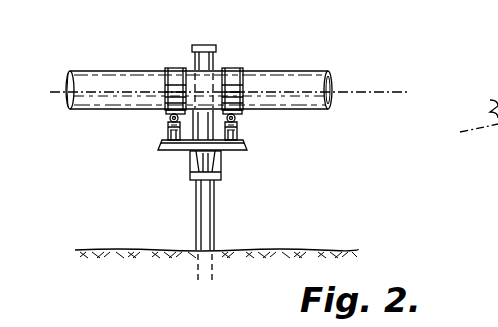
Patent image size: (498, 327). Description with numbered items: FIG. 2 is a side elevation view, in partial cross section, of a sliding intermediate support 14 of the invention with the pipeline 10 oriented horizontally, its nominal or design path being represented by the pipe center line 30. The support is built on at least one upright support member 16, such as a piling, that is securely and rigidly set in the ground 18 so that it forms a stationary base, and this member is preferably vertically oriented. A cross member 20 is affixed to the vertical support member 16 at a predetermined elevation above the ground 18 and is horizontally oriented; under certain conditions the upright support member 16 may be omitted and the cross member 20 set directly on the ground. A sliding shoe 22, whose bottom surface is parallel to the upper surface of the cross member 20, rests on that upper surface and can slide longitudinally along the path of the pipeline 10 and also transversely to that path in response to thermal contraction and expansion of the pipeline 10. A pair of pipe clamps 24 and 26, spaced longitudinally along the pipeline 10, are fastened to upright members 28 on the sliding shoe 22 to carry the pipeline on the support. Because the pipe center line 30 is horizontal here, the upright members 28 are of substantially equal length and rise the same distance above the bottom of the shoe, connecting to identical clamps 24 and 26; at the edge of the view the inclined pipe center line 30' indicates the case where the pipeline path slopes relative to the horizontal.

The pipeline 10 is at (290, 80).
The intermediate support 14 is at (246, 169).
The upright support member 16 is at (212, 212).
The ground 18 is at (100, 248).
The cross member 20 is at (190, 157).
The sliding shoe 22 is at (150, 148).
The pipe clamp 24 is at (171, 72).
The pipe clamp 26 is at (232, 72).
The upright members 28 is at (166, 139).
The pipe center line 30 is at (209, 78).
The pipe center line 30' is at (469, 116).